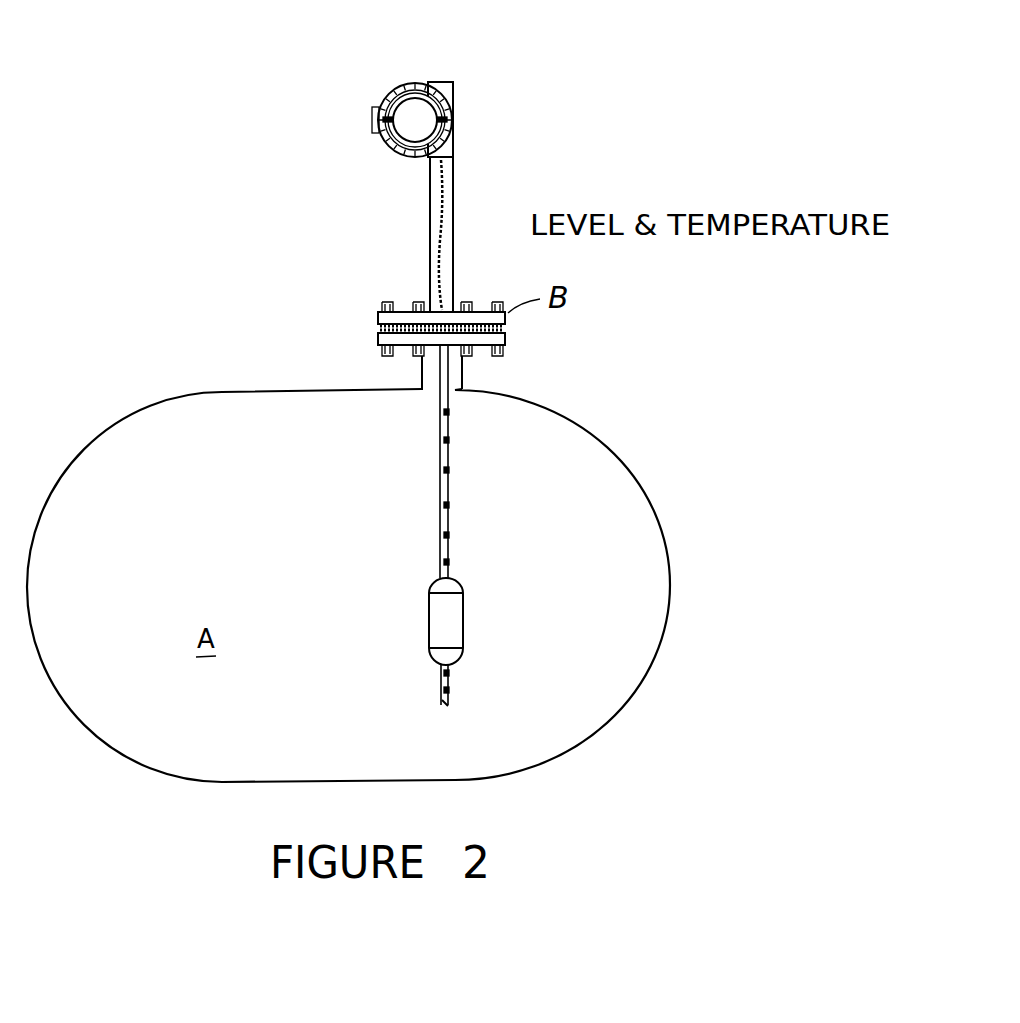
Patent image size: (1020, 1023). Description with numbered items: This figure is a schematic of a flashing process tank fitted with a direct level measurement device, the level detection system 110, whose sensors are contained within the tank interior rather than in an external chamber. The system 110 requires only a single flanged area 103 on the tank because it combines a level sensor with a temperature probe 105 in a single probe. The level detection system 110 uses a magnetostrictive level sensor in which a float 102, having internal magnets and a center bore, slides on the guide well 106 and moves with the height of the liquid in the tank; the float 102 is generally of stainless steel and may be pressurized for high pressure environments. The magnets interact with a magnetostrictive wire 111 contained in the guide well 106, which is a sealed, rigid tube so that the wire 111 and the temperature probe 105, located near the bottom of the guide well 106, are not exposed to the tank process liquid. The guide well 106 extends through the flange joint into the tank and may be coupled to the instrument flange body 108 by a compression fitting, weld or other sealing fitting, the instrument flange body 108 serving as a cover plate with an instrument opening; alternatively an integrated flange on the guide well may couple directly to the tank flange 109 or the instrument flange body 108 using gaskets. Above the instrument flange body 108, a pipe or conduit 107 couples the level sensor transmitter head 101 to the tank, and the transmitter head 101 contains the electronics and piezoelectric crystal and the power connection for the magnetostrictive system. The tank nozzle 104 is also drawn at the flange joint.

The level sensor transmitter head 101 is at (382, 99).
The float 102 is at (466, 592).
The flanged area 103 is at (335, 311).
The tank nozzle 104 is at (466, 372).
The temperature probe 105 is at (453, 708).
The guide well 106 is at (440, 505).
The pipe or conduit 107 is at (420, 214).
The instrument flange body 108 is at (374, 313).
The tank flange 109 is at (375, 343).
The level detection system 110 is at (522, 174).
The magnetostrictive wire 111 is at (372, 440).